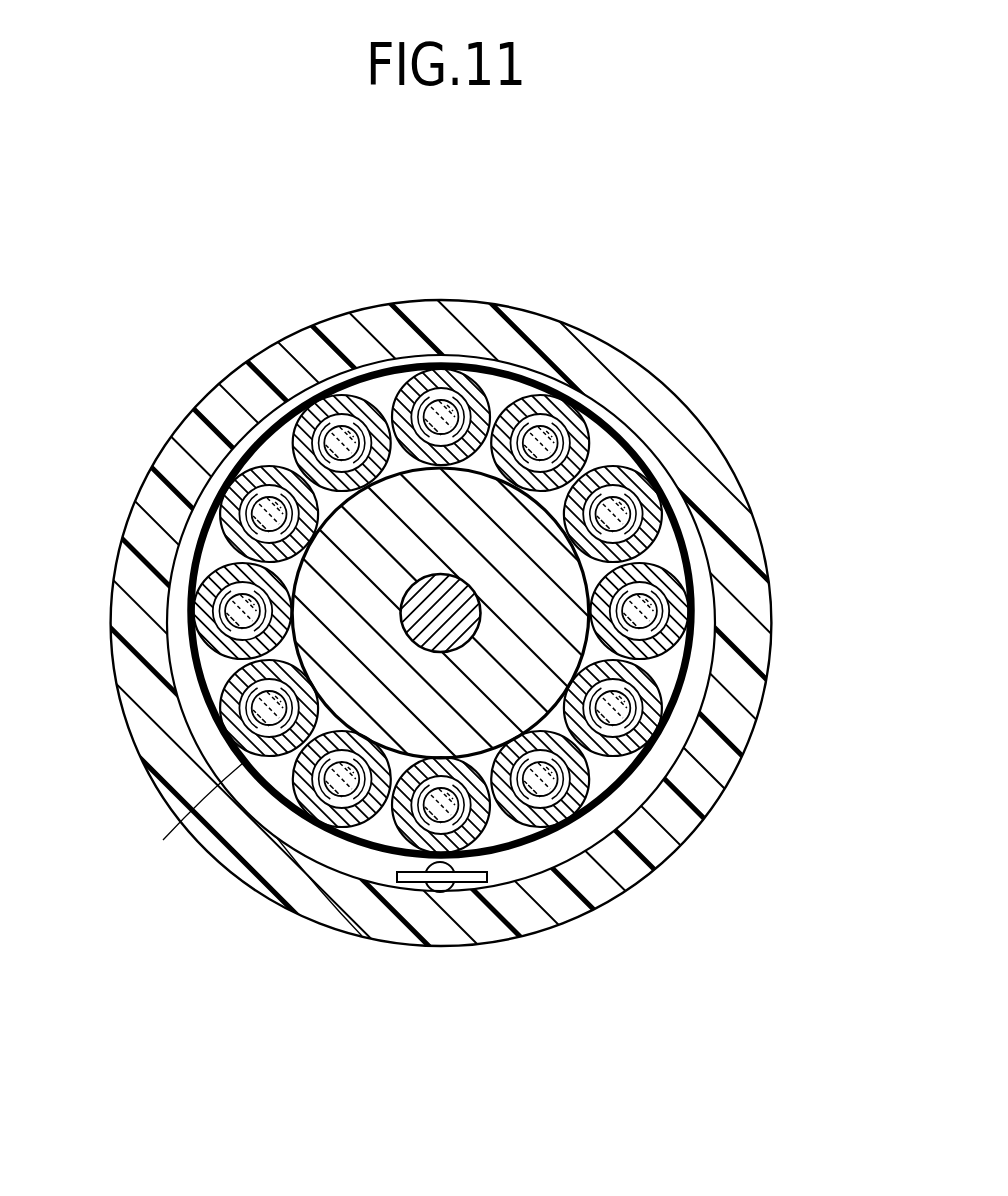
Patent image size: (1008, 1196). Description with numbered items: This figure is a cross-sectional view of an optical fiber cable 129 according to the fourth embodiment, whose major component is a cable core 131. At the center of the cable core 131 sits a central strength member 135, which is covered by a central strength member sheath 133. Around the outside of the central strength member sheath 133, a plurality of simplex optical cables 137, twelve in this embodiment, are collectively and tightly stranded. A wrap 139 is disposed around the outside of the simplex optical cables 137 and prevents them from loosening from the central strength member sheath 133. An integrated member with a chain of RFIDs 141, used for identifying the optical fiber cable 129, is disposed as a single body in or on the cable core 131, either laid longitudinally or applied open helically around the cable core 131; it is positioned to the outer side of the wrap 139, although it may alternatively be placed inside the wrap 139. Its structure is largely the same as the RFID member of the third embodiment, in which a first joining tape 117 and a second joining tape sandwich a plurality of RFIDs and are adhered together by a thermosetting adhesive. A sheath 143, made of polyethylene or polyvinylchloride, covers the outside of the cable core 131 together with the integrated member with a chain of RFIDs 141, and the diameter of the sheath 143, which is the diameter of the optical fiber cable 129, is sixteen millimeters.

The first joining tape 117 is at (552, 433).
The optical fiber cable 129 is at (767, 286).
The cable core 131 is at (366, 362).
The central strength member sheath 133 is at (537, 653).
The central strength member 135 is at (457, 620).
The simplex optical cables 137 is at (195, 585).
The wrap 139 is at (672, 854).
The integrated member with a chain of RFIDs 141 is at (425, 897).
The sheath 143 is at (560, 922).